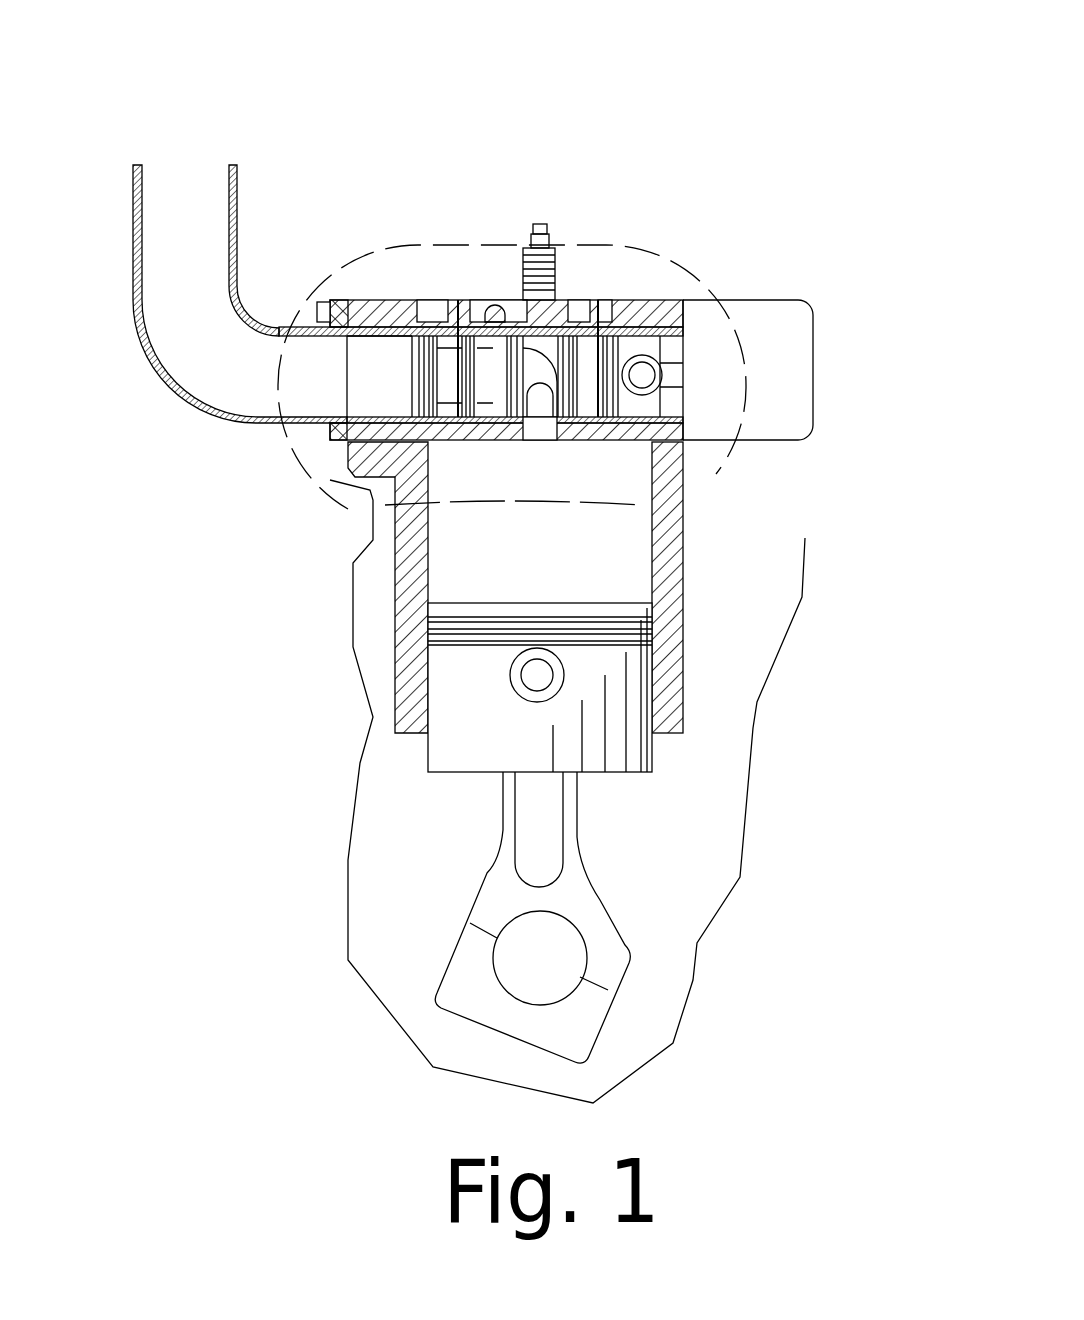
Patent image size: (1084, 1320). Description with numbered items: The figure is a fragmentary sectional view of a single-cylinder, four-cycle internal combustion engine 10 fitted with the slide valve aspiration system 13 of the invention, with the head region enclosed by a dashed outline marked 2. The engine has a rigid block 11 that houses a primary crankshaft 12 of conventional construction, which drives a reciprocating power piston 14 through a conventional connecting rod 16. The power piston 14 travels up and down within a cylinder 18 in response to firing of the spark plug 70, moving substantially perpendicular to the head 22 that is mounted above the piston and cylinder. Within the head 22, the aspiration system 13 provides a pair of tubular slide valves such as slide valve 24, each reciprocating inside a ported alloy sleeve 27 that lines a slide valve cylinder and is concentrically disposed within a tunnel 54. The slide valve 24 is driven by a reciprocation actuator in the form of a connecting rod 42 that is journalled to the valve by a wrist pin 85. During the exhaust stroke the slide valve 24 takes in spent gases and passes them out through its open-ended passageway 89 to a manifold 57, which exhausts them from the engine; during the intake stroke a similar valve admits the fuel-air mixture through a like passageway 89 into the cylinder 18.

The internal combustion engine 10 is at (503, 286).
The cylinder head region 2 is at (735, 200).
The aspiration system 13 is at (503, 371).
The head 22 is at (388, 272).
The spark plug 70 is at (550, 245).
The manifold 57 is at (243, 168).
The tunnel 54 is at (313, 375).
The passageway 89 is at (393, 364).
The sleeve 27 is at (680, 338).
The wrist pin 85 is at (657, 373).
The connecting rod 42 is at (682, 390).
The slide valve 24 is at (410, 392).
The block 11 is at (766, 579).
The cylinder 18 is at (644, 588).
The power piston 14 is at (632, 737).
The connecting rod 16 is at (487, 878).
The primary crankshaft 12 is at (567, 947).